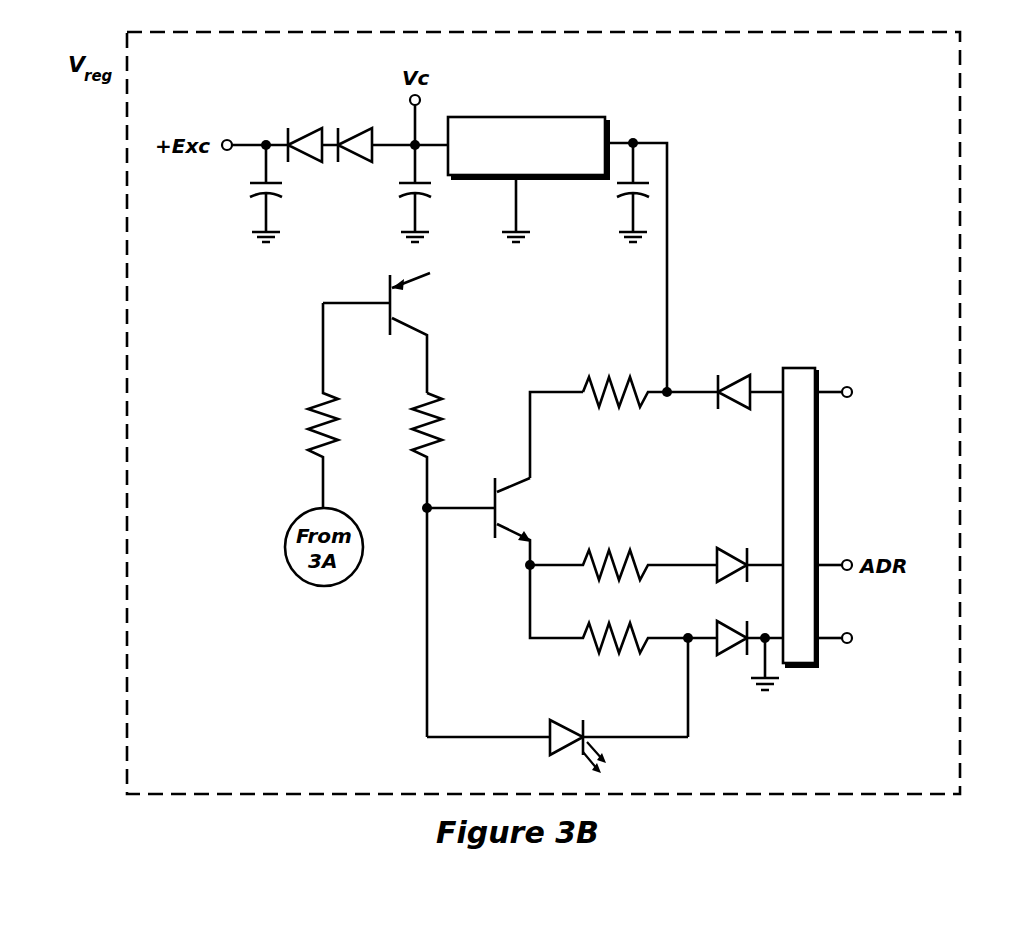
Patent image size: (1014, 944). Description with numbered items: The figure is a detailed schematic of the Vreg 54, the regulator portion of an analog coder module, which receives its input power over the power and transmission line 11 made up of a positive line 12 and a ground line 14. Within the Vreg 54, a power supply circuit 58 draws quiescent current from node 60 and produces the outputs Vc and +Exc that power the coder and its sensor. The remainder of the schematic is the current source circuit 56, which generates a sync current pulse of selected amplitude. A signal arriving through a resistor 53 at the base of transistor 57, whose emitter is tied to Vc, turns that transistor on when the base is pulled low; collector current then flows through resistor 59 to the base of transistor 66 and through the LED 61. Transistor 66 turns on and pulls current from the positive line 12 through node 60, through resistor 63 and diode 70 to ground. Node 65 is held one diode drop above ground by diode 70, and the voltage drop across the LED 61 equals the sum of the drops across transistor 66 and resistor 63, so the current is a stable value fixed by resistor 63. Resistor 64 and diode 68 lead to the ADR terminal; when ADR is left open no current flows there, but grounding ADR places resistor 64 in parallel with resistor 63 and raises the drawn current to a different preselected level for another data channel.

The power and transmission line 11 is at (937, 512).
The positive line 12 is at (827, 392).
The ground line 14 is at (830, 640).
The resistor 53 is at (310, 425).
The Vreg 54 is at (128, 678).
The current source circuit 56 is at (506, 362).
The transistor 57 is at (392, 318).
The power supply circuit 58 is at (575, 117).
The resistor 59 is at (417, 425).
The node 60 is at (680, 392).
The LED 61 is at (560, 728).
The resistor 63 is at (612, 633).
The resistor 64 is at (612, 560).
The node 65 is at (688, 633).
The transistor 66 is at (496, 520).
The diode 68 is at (724, 560).
The diode 70 is at (726, 633).